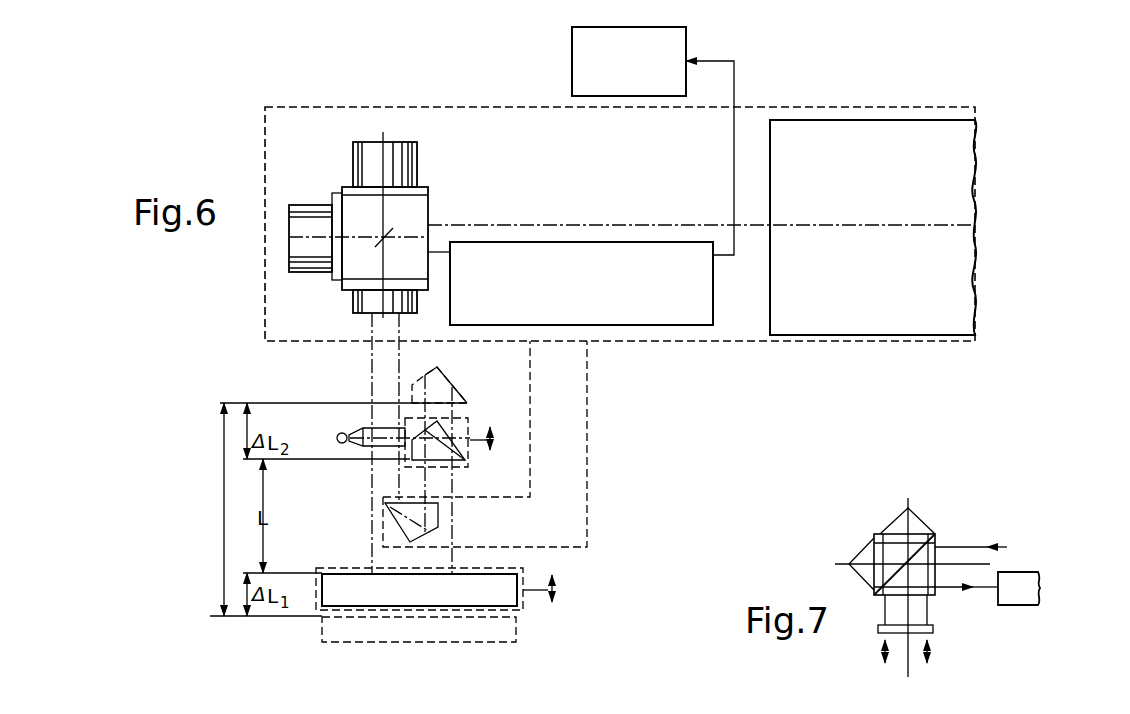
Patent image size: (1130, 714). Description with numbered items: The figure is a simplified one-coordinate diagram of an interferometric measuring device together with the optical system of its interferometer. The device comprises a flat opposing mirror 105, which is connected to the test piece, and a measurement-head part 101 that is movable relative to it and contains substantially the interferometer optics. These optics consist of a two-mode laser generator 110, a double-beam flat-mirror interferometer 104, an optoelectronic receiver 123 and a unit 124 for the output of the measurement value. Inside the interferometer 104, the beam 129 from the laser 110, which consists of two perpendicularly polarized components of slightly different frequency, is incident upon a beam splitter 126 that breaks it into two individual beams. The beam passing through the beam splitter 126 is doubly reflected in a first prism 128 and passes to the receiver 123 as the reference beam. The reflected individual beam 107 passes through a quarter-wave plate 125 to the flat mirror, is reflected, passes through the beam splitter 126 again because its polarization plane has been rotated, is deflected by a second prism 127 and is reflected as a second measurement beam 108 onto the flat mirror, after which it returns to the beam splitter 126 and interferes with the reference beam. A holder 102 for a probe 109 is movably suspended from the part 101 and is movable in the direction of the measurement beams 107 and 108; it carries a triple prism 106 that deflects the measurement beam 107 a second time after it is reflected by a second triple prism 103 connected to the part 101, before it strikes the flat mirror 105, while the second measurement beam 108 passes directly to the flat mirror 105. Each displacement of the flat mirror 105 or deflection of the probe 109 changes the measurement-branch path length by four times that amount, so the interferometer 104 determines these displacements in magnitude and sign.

In FIG. 6, the measurement-head part 101 is at (655, 343).
In FIG. 6, the holder 102 is at (472, 427).
In FIG. 6, the second triple prism 103 is at (390, 510).
In FIG. 6, the double-beam flat-mirror interferometer 104 is at (410, 212).
In FIG. 7, the double-beam flat-mirror interferometer 104 is at (941, 500).
In FIG. 6, the flat opposing mirror 105 is at (502, 597).
In FIG. 6, the triple prism 106 is at (455, 458).
In FIG. 6, the measurement beam 107 is at (400, 358).
In FIG. 7, the measurement beam 107 is at (930, 668).
In FIG. 6, the second measurement beam 108 is at (371, 360).
In FIG. 7, the second measurement beam 108 is at (885, 660).
In FIG. 6, the probe 109 is at (357, 441).
In FIG. 6, the two-mode laser generator 110 is at (960, 144).
In FIG. 6, the optoelectronic receiver 123 is at (586, 295).
In FIG. 7, the optoelectronic receiver 123 is at (1040, 590).
In FIG. 6, the unit for the output of the measurement value 124 is at (572, 54).
In FIG. 7, the λ/4 plate 125 is at (936, 630).
In FIG. 7, the beam splitter 126 is at (923, 553).
In FIG. 7, the second prism 127 is at (897, 522).
In FIG. 7, the first prism 128 is at (870, 548).
In FIG. 7, the beam 129 is at (972, 545).